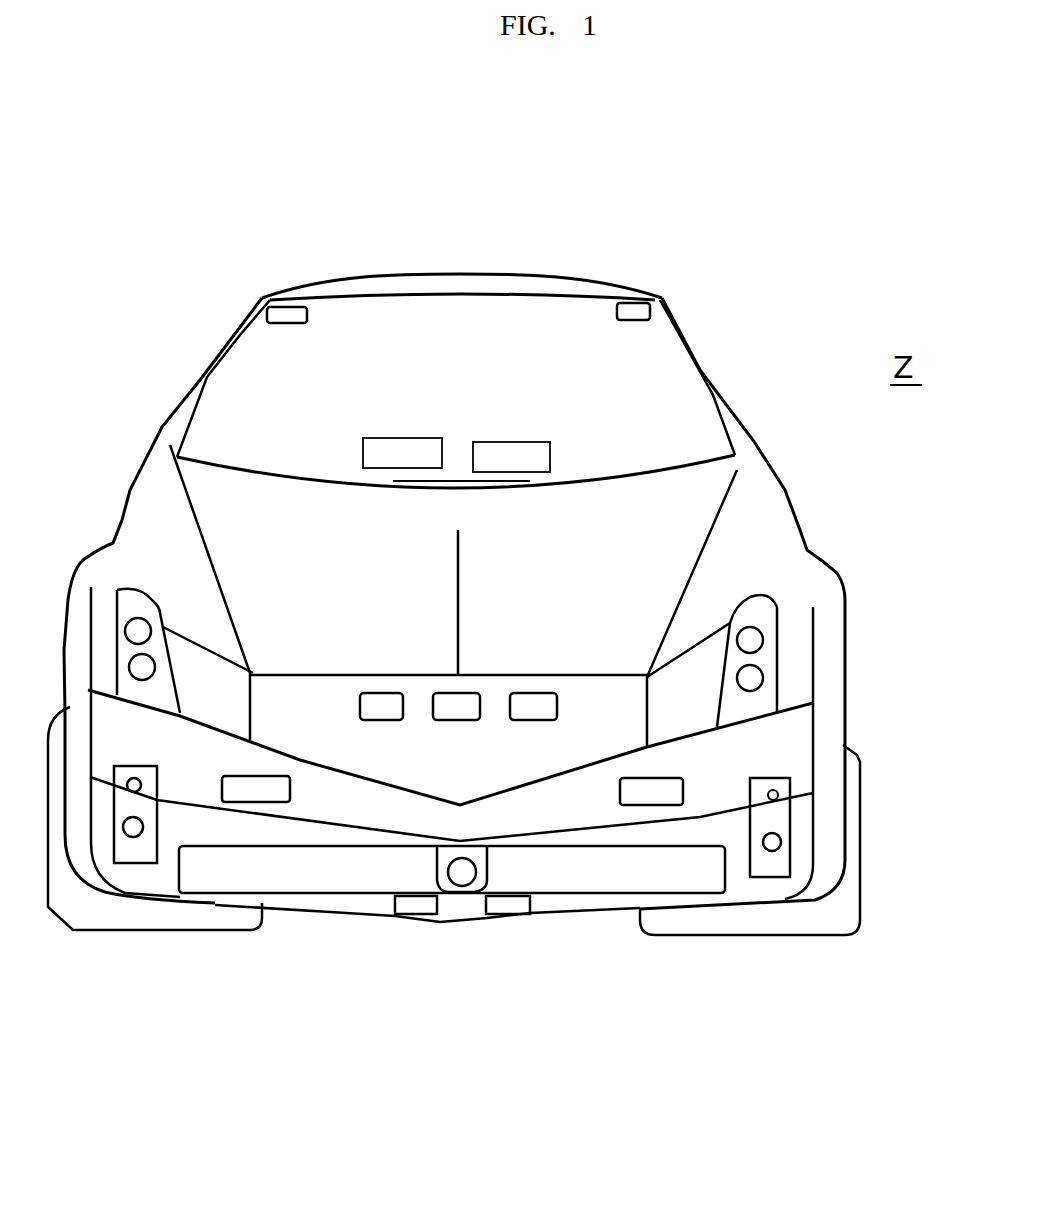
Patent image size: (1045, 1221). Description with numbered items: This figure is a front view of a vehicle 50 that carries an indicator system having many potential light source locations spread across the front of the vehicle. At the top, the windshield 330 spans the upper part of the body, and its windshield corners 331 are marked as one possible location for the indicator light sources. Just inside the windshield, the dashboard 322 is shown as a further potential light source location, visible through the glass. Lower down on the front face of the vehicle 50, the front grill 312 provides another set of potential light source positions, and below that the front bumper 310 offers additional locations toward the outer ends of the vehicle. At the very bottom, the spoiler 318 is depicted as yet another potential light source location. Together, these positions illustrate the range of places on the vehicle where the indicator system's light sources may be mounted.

The vehicle 50 is at (810, 530).
The front bumper 310 is at (260, 793).
The front grill 312 is at (367, 705).
The spoiler 318 is at (420, 914).
The dashboard 322 is at (456, 455).
The windshield 330 is at (683, 333).
The windshield corners 331 is at (270, 290).